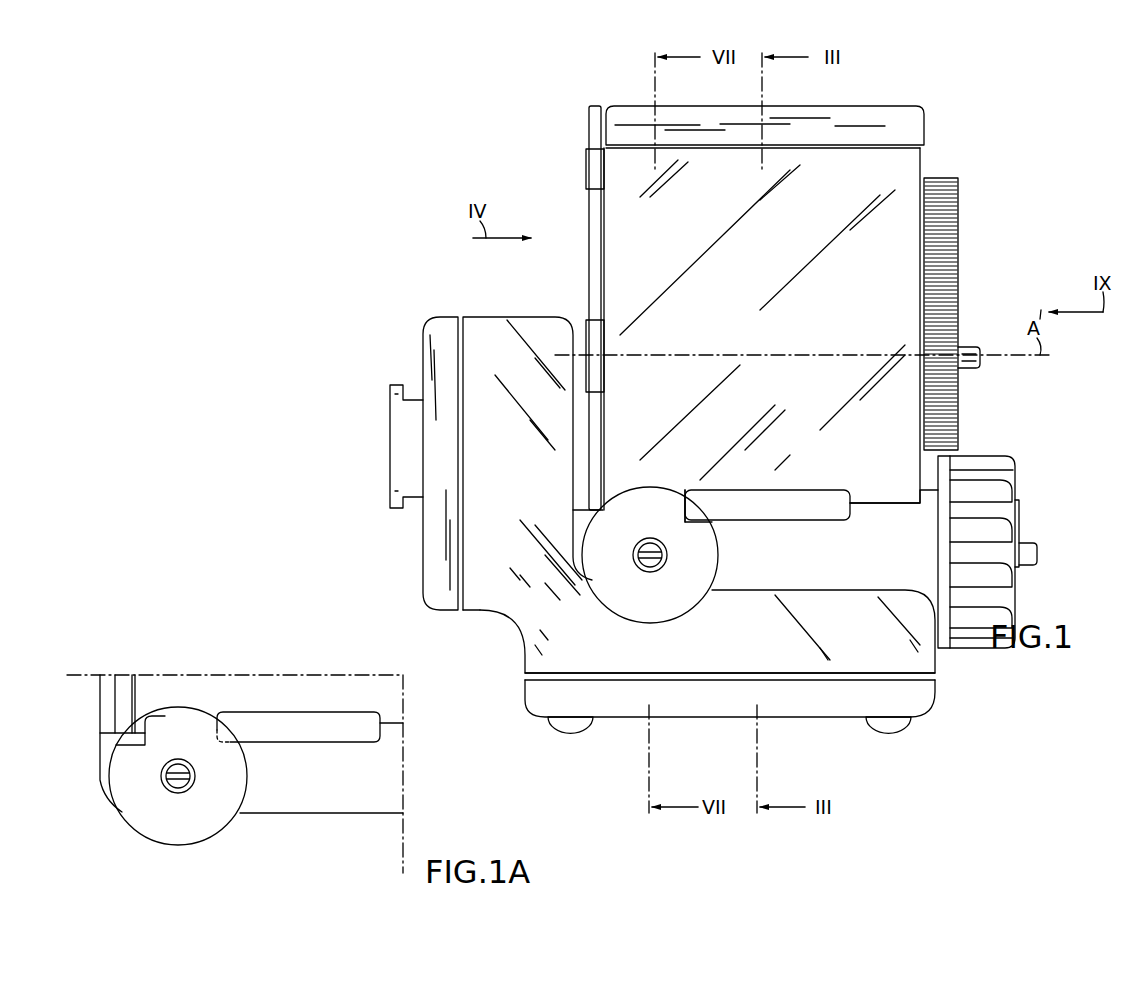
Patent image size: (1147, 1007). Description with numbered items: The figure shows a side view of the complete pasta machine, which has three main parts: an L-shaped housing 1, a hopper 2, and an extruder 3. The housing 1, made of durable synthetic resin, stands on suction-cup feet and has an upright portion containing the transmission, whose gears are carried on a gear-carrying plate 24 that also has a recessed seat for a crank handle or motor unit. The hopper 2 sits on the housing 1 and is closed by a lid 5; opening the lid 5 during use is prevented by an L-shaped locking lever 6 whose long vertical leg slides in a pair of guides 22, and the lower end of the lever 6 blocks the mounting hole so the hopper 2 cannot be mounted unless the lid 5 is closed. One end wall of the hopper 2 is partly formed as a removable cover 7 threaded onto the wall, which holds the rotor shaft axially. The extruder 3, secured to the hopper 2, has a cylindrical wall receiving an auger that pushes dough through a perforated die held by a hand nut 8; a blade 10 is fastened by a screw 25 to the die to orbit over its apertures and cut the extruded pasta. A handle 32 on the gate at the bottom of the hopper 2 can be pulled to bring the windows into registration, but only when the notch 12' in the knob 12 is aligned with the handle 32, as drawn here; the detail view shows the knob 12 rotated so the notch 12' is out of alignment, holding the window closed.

In FIG. 1, the housing 1 is at (396, 428).
In FIG. 1A, the housing 1 is at (86, 688).
In FIG. 1, the hopper 2 is at (636, 220).
In FIG. 1A, the hopper 2 is at (326, 688).
In FIG. 1, the extruder 3 is at (893, 530).
In FIG. 1A, the extruder 3 is at (390, 792).
In FIG. 1, the lid 5 is at (920, 116).
In FIG. 1, the locking lever 6 is at (590, 117).
In FIG. 1A, the locking lever 6 is at (122, 686).
In FIG. 1, the removable cover 7 is at (947, 292).
In FIG. 1, the hand nut 8 is at (995, 634).
In FIG. 1, the blade 10 is at (1019, 514).
In FIG. 1, the knob 12 is at (650, 569).
In FIG. 1A, the knob 12 is at (178, 791).
In FIG. 1, the notch 12' is at (690, 473).
In FIG. 1A, the notch 12' is at (174, 669).
In FIG. 1, the guides 22 is at (590, 166).
In FIG. 1, the gear-carrying plate 24 is at (432, 567).
In FIG. 1, the screw 25 is at (1037, 553).
In FIG. 1, the handle 32 is at (797, 500).
In FIG. 1A, the handle 32 is at (348, 731).